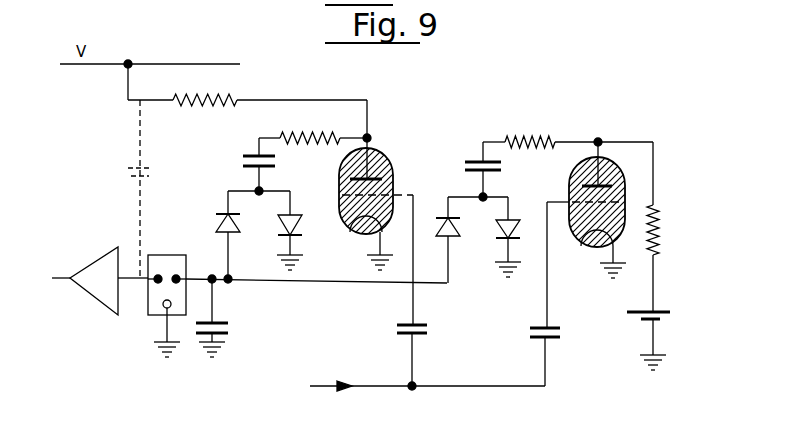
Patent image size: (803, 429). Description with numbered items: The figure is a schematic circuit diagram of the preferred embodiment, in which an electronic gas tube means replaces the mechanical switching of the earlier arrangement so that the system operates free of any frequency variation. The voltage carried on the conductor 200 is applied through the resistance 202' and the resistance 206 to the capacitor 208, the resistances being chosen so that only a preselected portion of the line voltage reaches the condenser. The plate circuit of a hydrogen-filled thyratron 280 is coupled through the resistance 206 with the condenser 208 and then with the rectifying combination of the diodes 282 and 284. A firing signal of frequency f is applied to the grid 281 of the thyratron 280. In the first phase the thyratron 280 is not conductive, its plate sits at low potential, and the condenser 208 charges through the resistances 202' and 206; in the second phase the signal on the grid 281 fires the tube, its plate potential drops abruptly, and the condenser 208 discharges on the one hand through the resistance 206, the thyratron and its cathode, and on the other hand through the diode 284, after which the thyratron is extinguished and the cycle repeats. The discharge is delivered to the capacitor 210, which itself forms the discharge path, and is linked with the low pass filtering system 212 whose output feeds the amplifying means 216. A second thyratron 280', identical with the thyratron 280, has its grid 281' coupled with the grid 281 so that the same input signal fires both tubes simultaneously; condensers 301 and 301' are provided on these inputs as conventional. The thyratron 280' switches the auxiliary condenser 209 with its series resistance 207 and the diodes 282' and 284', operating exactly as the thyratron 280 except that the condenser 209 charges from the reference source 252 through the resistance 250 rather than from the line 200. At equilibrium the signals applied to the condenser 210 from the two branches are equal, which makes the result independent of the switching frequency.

The conductor 200 is at (211, 64).
The resistance 202' is at (226, 88).
The resistance 206 is at (312, 146).
The capacitor 208 is at (242, 160).
The diode 284 is at (205, 235).
The diode 282 is at (310, 235).
The thyratron 280 is at (376, 188).
The grid 281 is at (425, 243).
The amplifying means 216 is at (95, 264).
The filtering system 212 is at (148, 315).
The capacitor 210 is at (227, 331).
The condenser 301 is at (387, 357).
The capacitor 209 is at (464, 158).
The resistance 207 is at (538, 141).
The diode 284' is at (460, 257).
The diode 282' is at (541, 240).
The thyratron 280' is at (611, 193).
The grid 281' is at (543, 250).
The condenser 301' is at (523, 357).
The resistance 250 is at (661, 240).
The reference source 252 is at (640, 318).